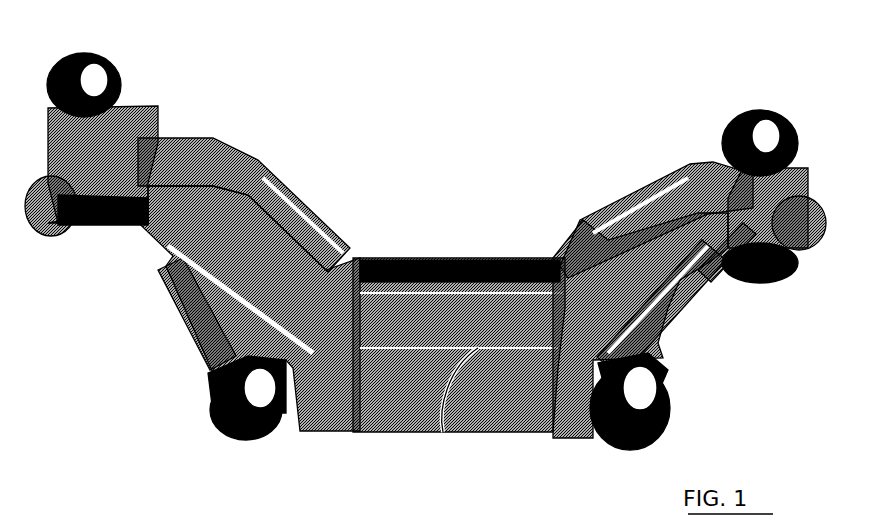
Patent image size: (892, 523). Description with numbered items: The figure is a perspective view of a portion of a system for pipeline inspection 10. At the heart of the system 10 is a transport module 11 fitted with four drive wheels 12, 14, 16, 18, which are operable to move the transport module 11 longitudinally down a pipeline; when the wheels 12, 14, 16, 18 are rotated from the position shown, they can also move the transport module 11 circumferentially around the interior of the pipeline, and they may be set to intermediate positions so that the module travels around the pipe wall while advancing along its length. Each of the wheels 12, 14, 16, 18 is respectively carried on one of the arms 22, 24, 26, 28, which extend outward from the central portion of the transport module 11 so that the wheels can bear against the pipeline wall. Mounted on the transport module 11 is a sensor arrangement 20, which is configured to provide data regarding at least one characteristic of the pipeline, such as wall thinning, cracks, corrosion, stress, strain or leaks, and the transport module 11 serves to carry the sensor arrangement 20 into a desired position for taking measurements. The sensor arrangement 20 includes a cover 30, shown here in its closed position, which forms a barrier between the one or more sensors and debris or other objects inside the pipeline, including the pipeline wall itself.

The system for pipeline inspection 10 is at (581, 56).
The transport module 11 is at (386, 182).
The drive wheel 12 is at (97, 48).
The drive wheel 14 is at (780, 110).
The drive wheel 16 is at (240, 437).
The drive wheel 18 is at (653, 430).
The sensor arrangement 20 is at (425, 385).
The arm 22 is at (230, 145).
The arm 24 is at (650, 183).
The arm 26 is at (177, 343).
The arm 28 is at (663, 330).
The cover 30 is at (390, 458).